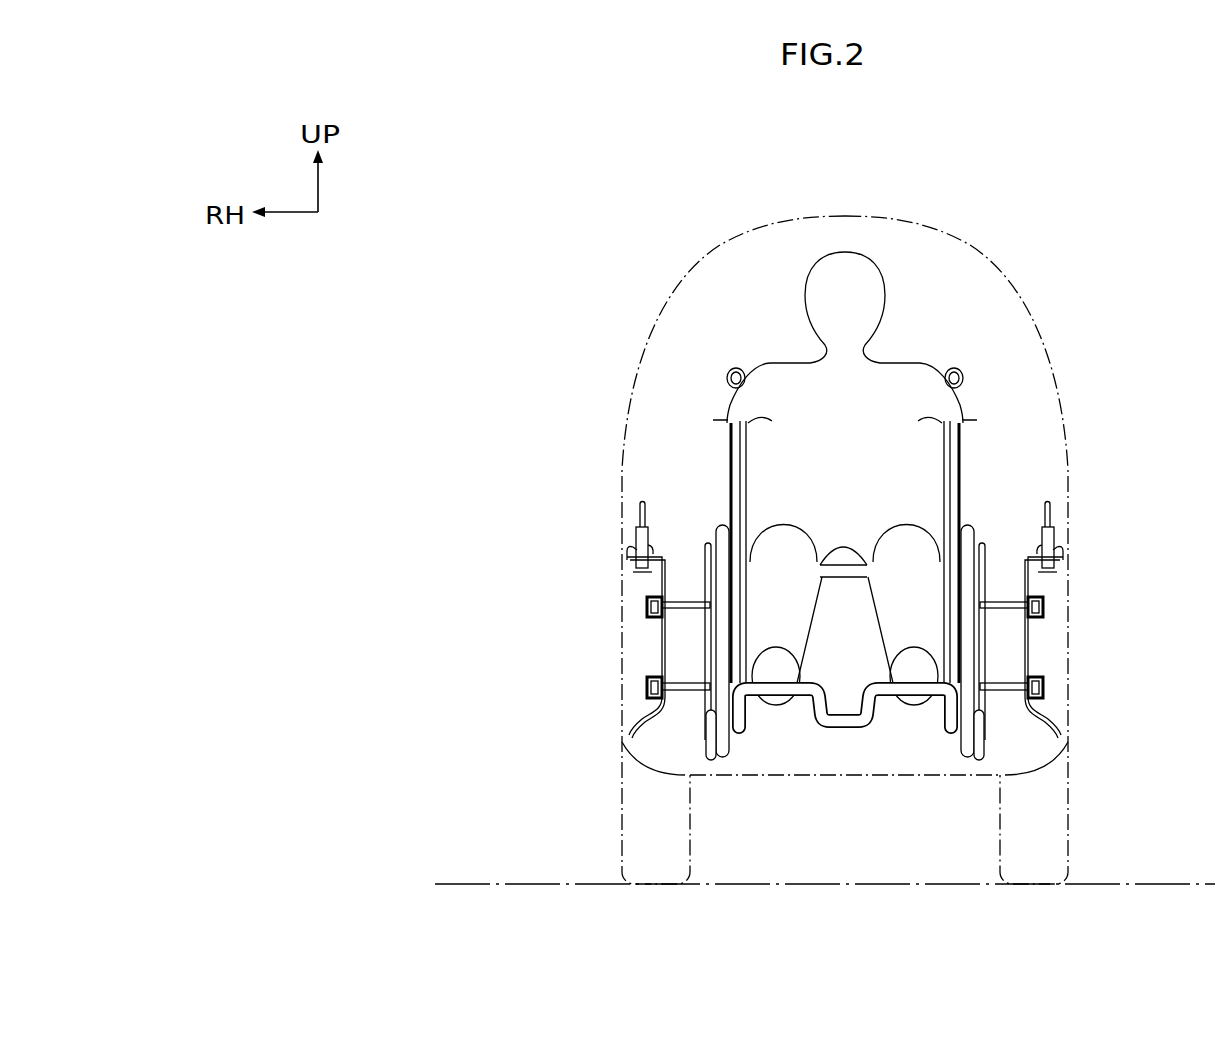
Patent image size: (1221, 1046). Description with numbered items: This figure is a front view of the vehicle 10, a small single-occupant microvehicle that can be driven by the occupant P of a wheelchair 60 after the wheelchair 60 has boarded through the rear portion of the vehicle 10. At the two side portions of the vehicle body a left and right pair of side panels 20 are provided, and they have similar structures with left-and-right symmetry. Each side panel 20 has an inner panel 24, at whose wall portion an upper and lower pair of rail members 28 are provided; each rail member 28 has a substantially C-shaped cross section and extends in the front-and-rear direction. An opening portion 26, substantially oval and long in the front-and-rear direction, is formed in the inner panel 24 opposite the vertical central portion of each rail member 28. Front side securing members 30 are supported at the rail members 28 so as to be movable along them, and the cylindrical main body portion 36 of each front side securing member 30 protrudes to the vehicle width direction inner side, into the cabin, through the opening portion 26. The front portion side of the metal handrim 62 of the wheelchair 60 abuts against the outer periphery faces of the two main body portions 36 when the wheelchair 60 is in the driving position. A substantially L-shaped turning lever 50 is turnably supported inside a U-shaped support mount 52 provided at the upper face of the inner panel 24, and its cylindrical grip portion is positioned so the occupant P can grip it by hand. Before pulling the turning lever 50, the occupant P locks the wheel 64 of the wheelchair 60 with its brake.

The vehicle 10 is at (939, 222).
The occupant P is at (843, 280).
The side panel 20 is at (845, 636).
The inner panel 24 is at (652, 646).
The opening portion 26 is at (677, 598).
The rail member 28 is at (647, 606).
The front side securing member 30 is at (838, 572).
The main body portion 36 is at (683, 597).
The turning lever 50 is at (637, 491).
The support mount 52 is at (637, 551).
The wheelchair 60 is at (738, 360).
The handrim 62 is at (700, 545).
The wheel 64 is at (725, 752).